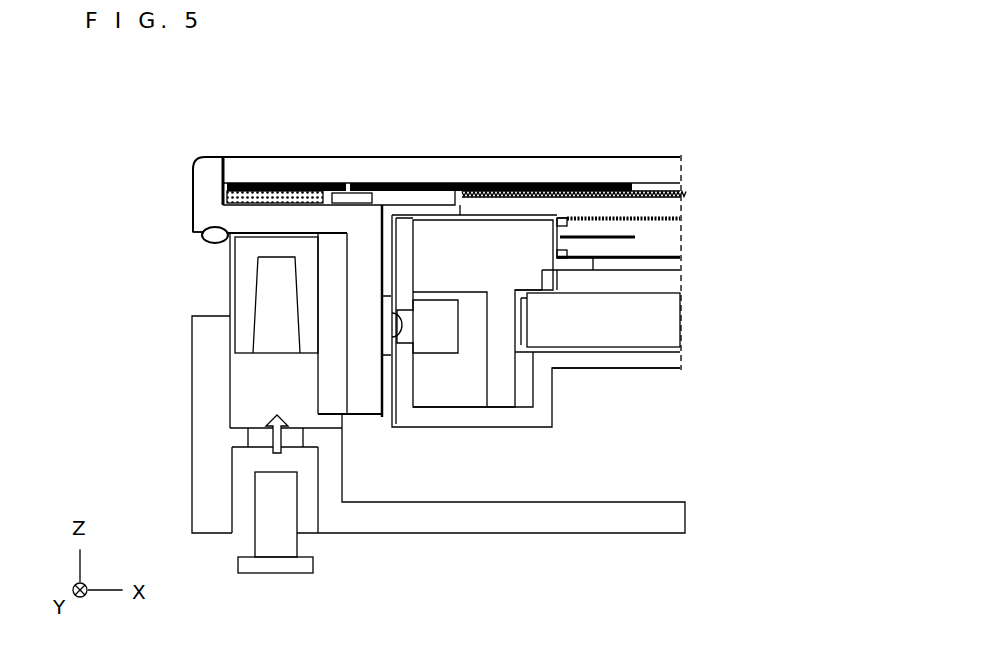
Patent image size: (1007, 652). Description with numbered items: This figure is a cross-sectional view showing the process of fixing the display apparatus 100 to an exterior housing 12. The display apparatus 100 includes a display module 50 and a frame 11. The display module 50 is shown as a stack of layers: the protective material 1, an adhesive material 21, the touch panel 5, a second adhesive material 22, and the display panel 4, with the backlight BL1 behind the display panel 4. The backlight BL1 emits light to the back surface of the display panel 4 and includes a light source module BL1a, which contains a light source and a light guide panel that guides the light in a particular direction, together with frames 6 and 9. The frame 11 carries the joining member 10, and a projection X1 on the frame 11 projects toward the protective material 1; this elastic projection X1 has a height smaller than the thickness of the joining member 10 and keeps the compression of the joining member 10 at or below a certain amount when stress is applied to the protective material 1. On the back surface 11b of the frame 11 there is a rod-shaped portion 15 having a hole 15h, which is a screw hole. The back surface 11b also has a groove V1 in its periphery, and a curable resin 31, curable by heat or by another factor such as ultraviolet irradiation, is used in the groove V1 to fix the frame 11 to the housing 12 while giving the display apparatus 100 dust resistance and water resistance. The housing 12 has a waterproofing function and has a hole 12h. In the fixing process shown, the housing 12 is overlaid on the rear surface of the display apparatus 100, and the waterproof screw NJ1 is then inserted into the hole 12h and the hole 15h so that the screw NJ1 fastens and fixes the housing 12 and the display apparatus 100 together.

The display apparatus 100 is at (308, 94).
The frame 11 is at (204, 157).
The display module 50 is at (307, 152).
The joining member 10 is at (193, 197).
The back surface 11b is at (257, 230).
The groove V1 is at (205, 227).
The curable resin 31 is at (205, 245).
The projection X1 is at (349, 183).
The protective material 1 is at (675, 162).
The adhesive material 21 is at (674, 188).
The touch panel 5 is at (675, 206).
The adhesive material 22 is at (682, 218).
The display panel 4 is at (684, 220).
The frame 6 is at (580, 263).
The backlight BL1 is at (748, 258).
The light source module BL1a is at (684, 273).
The frame 9 is at (668, 357).
The exterior housing 12 is at (192, 315).
The hole 12h is at (293, 426).
The rod-shaped portion 15 is at (235, 283).
The hole 15h is at (277, 356).
The screw NJ1 is at (240, 573).